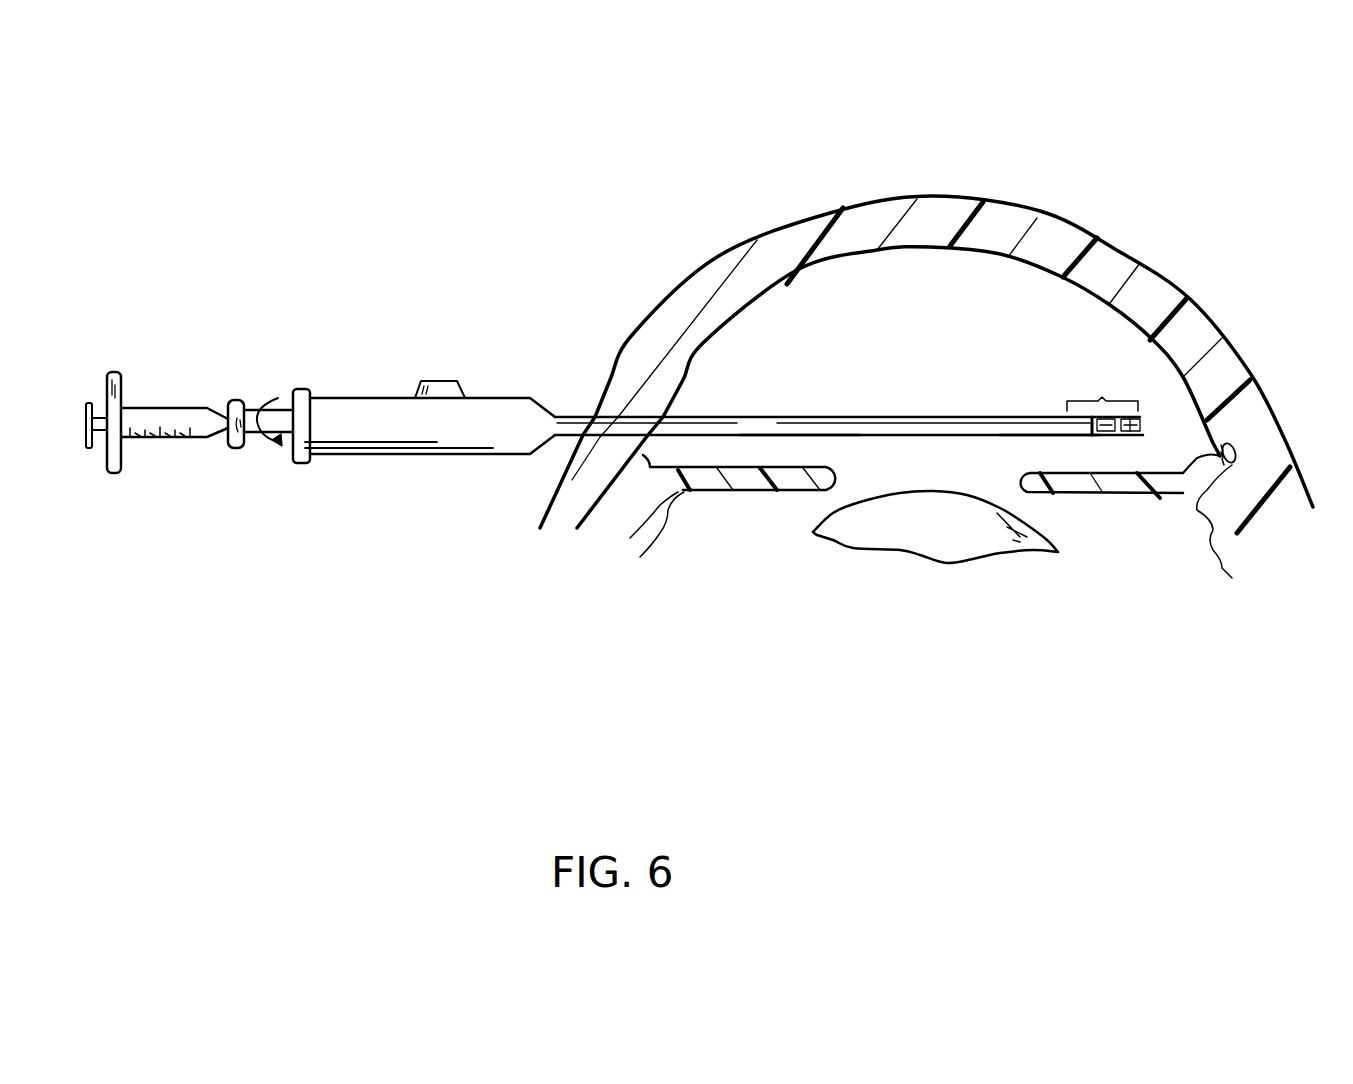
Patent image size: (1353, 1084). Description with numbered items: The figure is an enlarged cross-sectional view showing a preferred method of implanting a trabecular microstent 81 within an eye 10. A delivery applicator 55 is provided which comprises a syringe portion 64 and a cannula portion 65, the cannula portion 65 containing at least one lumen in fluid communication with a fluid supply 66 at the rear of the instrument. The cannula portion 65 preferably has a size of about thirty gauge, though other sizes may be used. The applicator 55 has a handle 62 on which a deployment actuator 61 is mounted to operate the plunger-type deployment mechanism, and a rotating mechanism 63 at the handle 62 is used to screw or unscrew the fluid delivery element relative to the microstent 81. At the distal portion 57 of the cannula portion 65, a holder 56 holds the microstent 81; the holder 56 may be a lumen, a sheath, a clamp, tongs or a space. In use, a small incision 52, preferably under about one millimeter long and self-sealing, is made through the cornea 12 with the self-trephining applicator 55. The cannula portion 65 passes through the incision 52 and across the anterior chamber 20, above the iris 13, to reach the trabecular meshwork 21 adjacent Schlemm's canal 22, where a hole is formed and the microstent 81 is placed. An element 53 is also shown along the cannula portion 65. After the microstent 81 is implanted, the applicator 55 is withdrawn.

The eye 10 is at (700, 152).
The cornea 12 is at (1120, 262).
The iris 13 is at (750, 496).
The anterior chamber 20 is at (773, 353).
The trabecular meshwork 21 is at (1183, 497).
The Schlemm's canal 22 is at (1236, 440).
The incision 52 is at (592, 408).
The outer sheath 53 is at (1047, 438).
The applicator 55 is at (422, 492).
The holder 56 is at (1110, 437).
The distal portion 57 is at (1100, 394).
The deployment actuator 61 is at (435, 380).
The handle 62 is at (337, 396).
The rotating mechanism 63 is at (252, 403).
The syringe portion 64 is at (165, 407).
The cannula portion 65 is at (812, 440).
The fluid supply 66 is at (124, 368).
The trabecular microstent 81 is at (1124, 415).